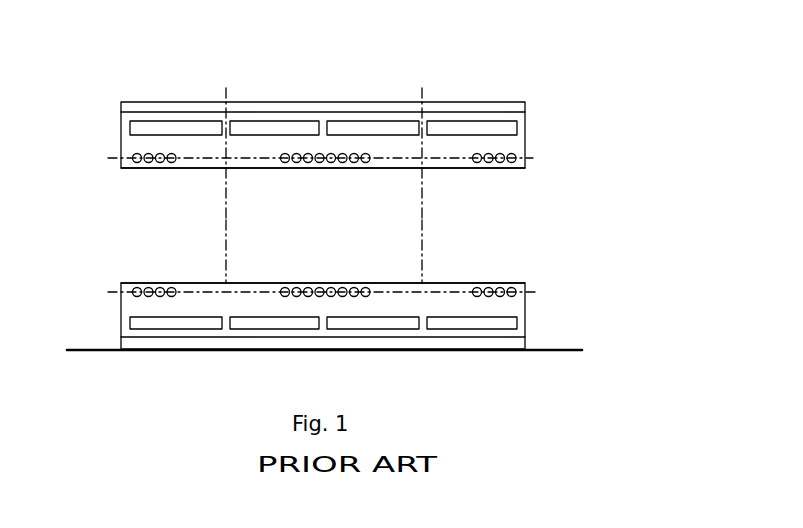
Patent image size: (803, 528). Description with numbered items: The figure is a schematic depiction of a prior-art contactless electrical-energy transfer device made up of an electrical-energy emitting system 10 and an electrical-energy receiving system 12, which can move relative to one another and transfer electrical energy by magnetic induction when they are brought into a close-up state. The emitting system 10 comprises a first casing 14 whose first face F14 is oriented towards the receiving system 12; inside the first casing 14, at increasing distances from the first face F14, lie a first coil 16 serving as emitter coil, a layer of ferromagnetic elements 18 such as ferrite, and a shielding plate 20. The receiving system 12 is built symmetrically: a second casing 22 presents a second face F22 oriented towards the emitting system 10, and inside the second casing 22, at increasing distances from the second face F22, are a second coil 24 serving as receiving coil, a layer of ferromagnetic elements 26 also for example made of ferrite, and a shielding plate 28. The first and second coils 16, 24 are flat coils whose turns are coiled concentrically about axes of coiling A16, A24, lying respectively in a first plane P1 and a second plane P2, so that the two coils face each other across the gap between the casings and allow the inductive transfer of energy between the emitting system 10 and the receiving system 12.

The electrical-energy emitting system 10 is at (553, 295).
The electrical-energy receiving system 12 is at (537, 143).
The first casing 14 is at (121, 316).
The first coil 16 is at (155, 283).
The layer of ferromagnetic elements 18 is at (518, 323).
The shielding plate 20 is at (517, 348).
The second casing 22 is at (121, 140).
The second coil 24 is at (156, 152).
The layer of ferromagnetic elements 26 is at (508, 129).
The shielding plate 28 is at (512, 107).
The first plane P1 is at (108, 292).
The second plane P2 is at (108, 158).
The first face F14 is at (137, 283).
The second face F22 is at (130, 169).
The axis of coiling A16 is at (226, 241).
The axis of coiling A24 is at (225, 92).